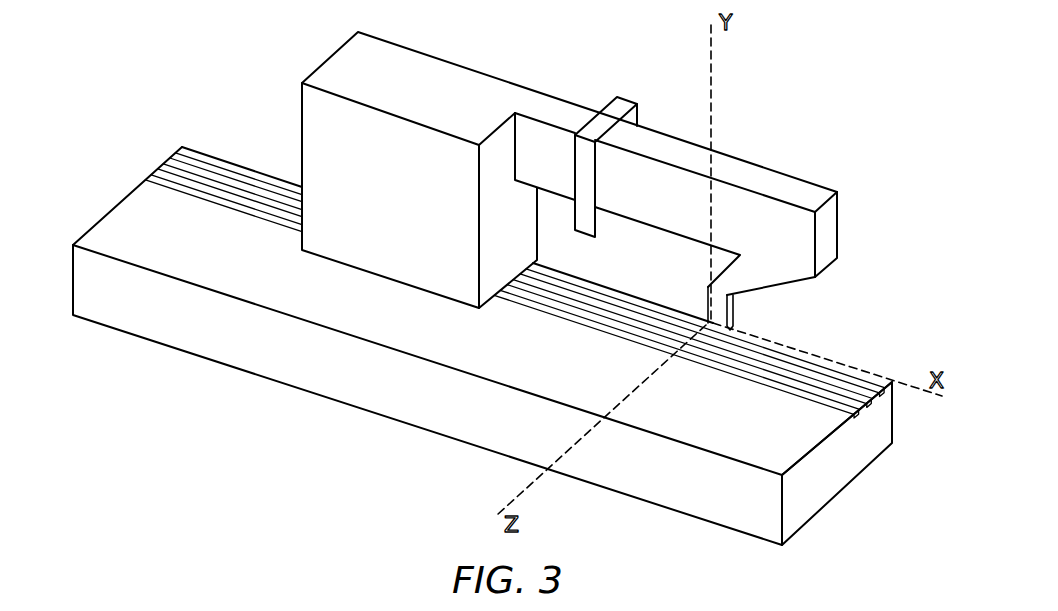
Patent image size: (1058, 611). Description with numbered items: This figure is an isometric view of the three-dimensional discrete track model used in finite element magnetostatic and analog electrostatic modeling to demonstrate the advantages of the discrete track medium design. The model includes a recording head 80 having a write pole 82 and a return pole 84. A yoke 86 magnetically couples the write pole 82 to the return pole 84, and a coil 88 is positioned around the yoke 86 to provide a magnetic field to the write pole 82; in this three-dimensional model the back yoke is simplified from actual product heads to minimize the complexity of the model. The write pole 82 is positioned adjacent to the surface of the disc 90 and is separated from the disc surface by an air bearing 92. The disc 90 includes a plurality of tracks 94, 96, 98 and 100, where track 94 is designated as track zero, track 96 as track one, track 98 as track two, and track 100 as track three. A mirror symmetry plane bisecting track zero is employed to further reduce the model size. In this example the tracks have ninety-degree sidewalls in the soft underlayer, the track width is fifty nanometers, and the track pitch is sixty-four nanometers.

The recording head 80 is at (848, 160).
The write pole 82 is at (723, 325).
The return pole 84 is at (310, 142).
The yoke 86 is at (758, 175).
The coil 88 is at (615, 110).
The disc 90 is at (165, 326).
The air bearing 92 is at (706, 318).
The track 94 is at (889, 389).
The track 96 is at (876, 408).
The track 98 is at (865, 416).
The track 100 is at (858, 424).